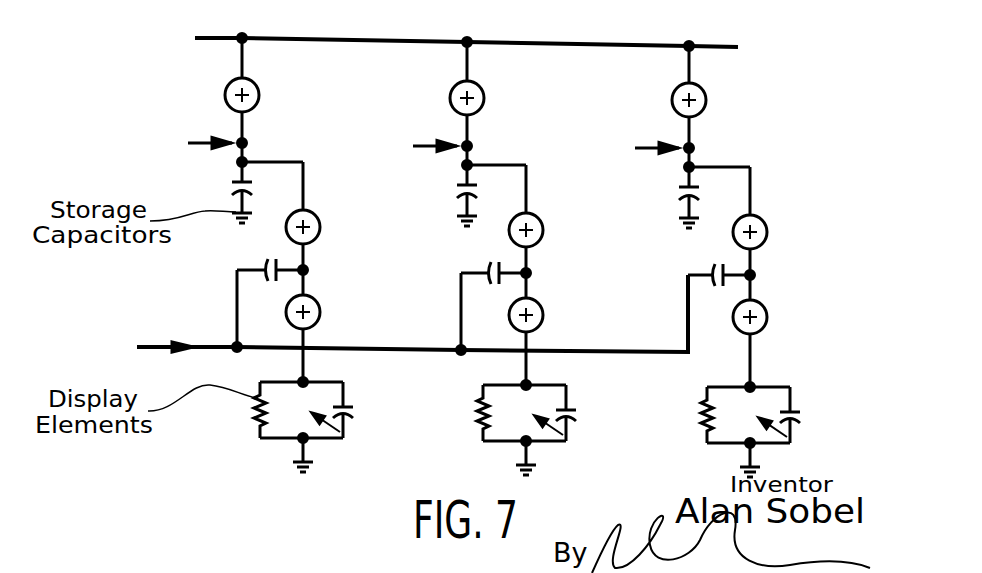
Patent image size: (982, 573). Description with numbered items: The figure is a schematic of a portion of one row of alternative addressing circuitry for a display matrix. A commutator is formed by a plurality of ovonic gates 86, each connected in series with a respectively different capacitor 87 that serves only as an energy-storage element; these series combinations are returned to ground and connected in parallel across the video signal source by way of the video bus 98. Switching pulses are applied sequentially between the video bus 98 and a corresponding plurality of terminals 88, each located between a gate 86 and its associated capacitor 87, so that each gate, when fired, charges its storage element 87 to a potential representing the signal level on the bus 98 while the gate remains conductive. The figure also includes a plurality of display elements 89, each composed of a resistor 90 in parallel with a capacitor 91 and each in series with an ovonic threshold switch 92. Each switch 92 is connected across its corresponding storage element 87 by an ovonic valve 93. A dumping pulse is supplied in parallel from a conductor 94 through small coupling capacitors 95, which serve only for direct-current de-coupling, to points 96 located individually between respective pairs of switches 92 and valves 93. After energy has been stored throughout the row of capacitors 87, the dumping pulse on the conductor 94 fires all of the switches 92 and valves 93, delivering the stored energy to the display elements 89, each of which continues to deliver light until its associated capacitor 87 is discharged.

The ovonic gate 86 is at (255, 85).
The capacitor 87 is at (233, 183).
The terminal 88 is at (246, 142).
The display element 89 is at (340, 432).
The resistor 90 is at (258, 408).
The capacitor 91 is at (347, 408).
The ovonic threshold switch 92 is at (320, 310).
The ovonic valve 93 is at (316, 218).
The conductor 94 is at (399, 349).
The coupling capacitor 95 is at (265, 262).
The point 96 is at (309, 270).
The video bus 98 is at (637, 48).